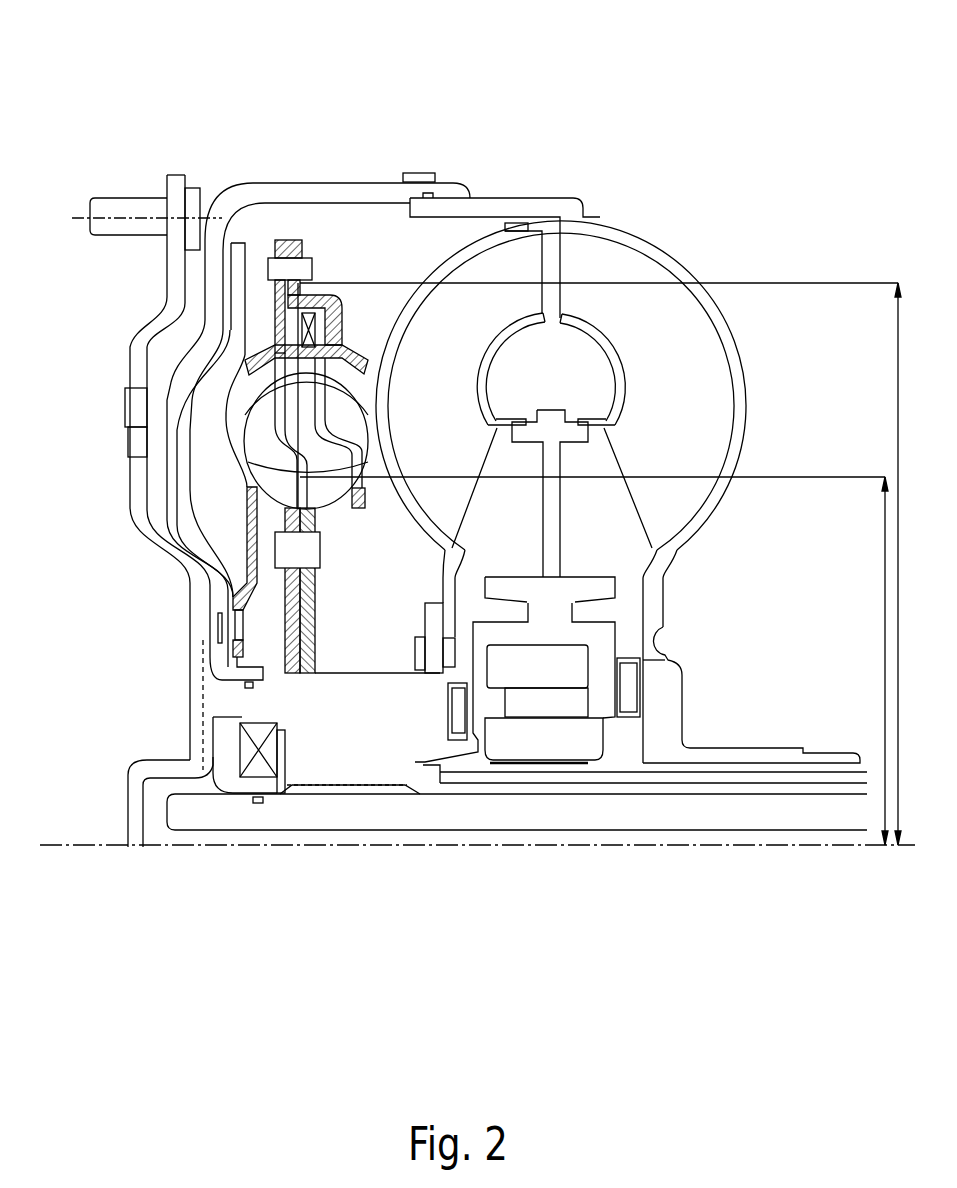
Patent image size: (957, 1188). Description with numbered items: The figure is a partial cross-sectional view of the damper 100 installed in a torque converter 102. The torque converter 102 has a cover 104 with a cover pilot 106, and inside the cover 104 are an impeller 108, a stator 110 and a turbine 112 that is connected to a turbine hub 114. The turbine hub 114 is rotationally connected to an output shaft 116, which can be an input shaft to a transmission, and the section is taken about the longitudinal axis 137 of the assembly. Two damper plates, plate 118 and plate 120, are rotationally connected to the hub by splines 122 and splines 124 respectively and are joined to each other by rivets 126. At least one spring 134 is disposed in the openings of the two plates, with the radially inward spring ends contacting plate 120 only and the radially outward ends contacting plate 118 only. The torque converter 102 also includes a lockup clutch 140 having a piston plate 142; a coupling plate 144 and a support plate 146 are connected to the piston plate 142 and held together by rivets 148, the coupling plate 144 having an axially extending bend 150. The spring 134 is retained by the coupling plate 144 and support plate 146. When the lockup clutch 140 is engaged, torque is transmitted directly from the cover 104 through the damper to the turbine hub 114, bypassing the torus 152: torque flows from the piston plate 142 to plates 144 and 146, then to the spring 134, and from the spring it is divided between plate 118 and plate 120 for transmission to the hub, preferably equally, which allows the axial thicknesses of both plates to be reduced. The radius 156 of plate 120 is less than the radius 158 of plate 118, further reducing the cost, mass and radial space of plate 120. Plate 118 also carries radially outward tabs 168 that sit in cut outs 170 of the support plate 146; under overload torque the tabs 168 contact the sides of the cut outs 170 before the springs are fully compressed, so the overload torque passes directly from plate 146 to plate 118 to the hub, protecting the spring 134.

The damper 100 is at (393, 186).
The torque converter 102 is at (700, 128).
The cover 104 is at (178, 583).
The cover pilot 106 is at (128, 808).
The impeller 108 is at (561, 385).
The stator 110 is at (560, 548).
The turbine 112 is at (552, 421).
The turbine hub 114 is at (337, 757).
The output shaft 116 is at (710, 808).
The plate 118 is at (277, 295).
The plate 120 is at (313, 640).
The splines 122 is at (273, 698).
The splines 124 is at (282, 683).
The rivets 126 is at (310, 552).
The spring 134 is at (245, 445).
The longitudinal axis 137 is at (767, 848).
The lockup clutch 140 is at (200, 273).
The piston plate 142 is at (183, 453).
The coupling plate 144 is at (277, 238).
The support plate 146 is at (367, 342).
The rivets 148 is at (300, 238).
The axially extending bend 150 is at (262, 426).
The torus 152 is at (553, 370).
The radius 156 is at (885, 660).
The radius 158 is at (898, 408).
The tabs 168 is at (323, 296).
The cut outs 170 is at (333, 282).